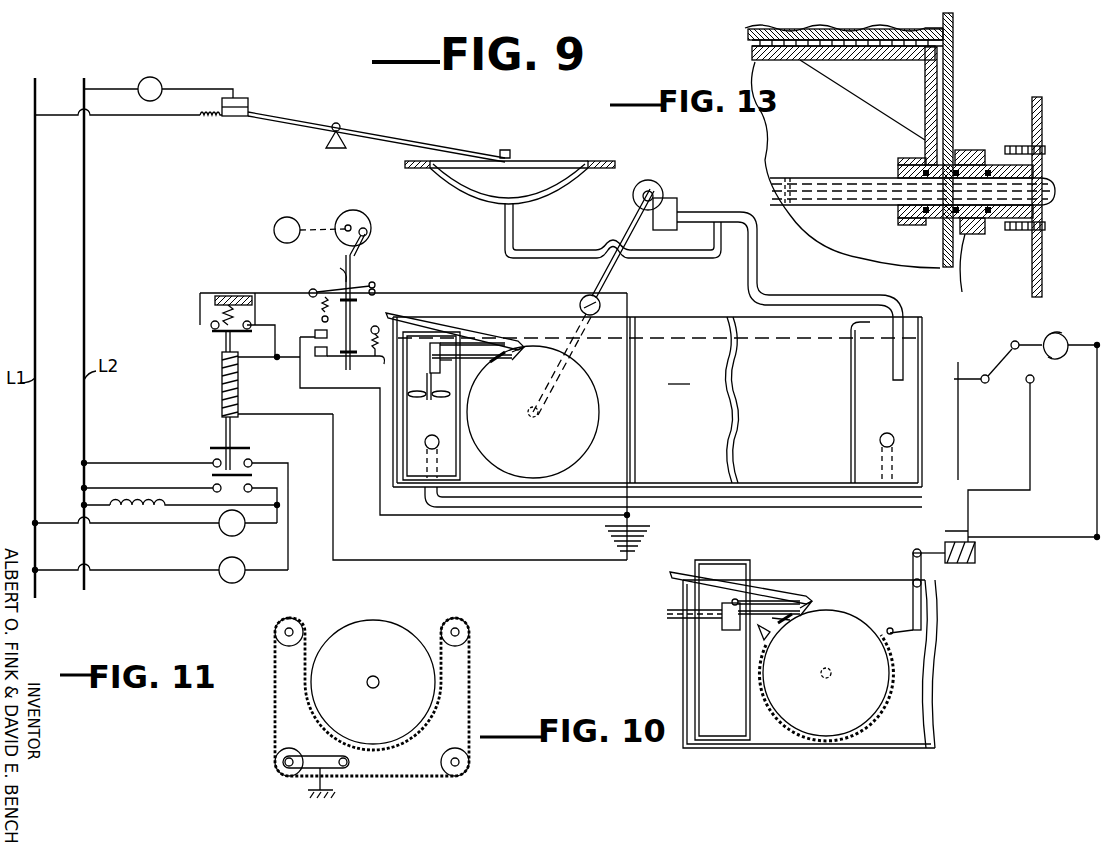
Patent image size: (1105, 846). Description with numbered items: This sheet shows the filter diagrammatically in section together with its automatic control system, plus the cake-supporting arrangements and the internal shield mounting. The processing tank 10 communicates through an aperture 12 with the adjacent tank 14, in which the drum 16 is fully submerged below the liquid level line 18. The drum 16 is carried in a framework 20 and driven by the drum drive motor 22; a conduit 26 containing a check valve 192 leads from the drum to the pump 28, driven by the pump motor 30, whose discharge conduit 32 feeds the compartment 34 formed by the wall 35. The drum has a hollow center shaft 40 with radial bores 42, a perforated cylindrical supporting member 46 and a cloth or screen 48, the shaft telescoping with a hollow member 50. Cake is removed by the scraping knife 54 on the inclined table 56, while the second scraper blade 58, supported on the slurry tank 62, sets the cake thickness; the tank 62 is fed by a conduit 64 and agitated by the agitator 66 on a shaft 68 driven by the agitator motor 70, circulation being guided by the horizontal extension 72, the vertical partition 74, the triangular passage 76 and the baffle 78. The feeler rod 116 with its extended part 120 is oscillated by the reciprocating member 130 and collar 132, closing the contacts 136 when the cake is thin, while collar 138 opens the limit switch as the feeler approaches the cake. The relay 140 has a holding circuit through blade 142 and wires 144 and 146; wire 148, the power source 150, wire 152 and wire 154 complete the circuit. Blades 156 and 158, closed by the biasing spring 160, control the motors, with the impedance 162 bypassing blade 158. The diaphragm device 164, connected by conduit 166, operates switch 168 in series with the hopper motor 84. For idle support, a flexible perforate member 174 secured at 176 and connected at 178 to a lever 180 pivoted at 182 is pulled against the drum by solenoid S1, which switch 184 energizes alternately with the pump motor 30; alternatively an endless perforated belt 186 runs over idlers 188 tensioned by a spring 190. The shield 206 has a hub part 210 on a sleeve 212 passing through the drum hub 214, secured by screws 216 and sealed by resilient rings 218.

In FIG. 9, the processing tank 10 is at (679, 374).
In FIG. 9, the aperture 12 is at (666, 426).
In FIG. 10, the aperture 12 is at (835, 664).
In FIG. 9, the tank 14 is at (530, 335).
In FIG. 9, the drum 16 is at (598, 382).
In FIG. 11, the drum 16 is at (384, 620).
In FIG. 10, the drum 16 is at (851, 612).
In FIG. 9, the liquid level line 18 is at (629, 328).
In FIG. 13, the framework 20 is at (1030, 104).
In FIG. 9, the drum drive motor 22 is at (240, 580).
In FIG. 9, the conduit 26 is at (610, 278).
In FIG. 9, the pump 28 is at (665, 184).
In FIG. 9, the pump motor 30 is at (1050, 334).
In FIG. 9, the discharge conduit 32 is at (750, 280).
In FIG. 9, the compartment 34 is at (388, 438).
In FIG. 9, the wall 35 is at (853, 402).
In FIG. 13, the hollow center shaft 40 is at (845, 177).
In FIG. 13, the radial bores 42 is at (795, 178).
In FIG. 13, the cylindrical supporting member 46 is at (752, 53).
In FIG. 13, the cloth or screen 48 is at (750, 33).
In FIG. 13, the hollow member 50 is at (900, 216).
In FIG. 9, the scraping knife 54 is at (508, 338).
In FIG. 10, the scraping knife 54 is at (805, 596).
In FIG. 9, the inclined table 56 is at (470, 325).
In FIG. 10, the inclined table 56 is at (790, 556).
In FIG. 9, the second scraper blade 58 is at (500, 364).
In FIG. 10, the second scraper blade 58 is at (776, 630).
In FIG. 9, the slurry tank 62 is at (461, 456).
In FIG. 10, the slurry tank 62 is at (752, 706).
In FIG. 9, the conduit 64 is at (708, 506).
In FIG. 9, the agitator 66 is at (435, 398).
In FIG. 9, the shaft 68 is at (422, 398).
In FIG. 9, the agitator motor 70 is at (240, 533).
In FIG. 9, the horizontal extension of blade 72 is at (426, 368).
In FIG. 10, the horizontal extension of blade 72 is at (738, 634).
In FIG. 9, the vertical partition 74 is at (430, 358).
In FIG. 10, the vertical partition 74 is at (699, 646).
In FIG. 9, the triangular passage 76 is at (445, 345).
In FIG. 10, the triangular passage 76 is at (700, 618).
In FIG. 9, the horizontal baffle 78 is at (387, 314).
In FIG. 10, the horizontal baffle 78 is at (730, 600).
In FIG. 9, the hopper motor 84 is at (150, 77).
In FIG. 10, the feeler rod 116 is at (774, 656).
In FIG. 9, the extended part of rod 120 is at (372, 350).
In FIG. 9, the reciprocating member 130 is at (361, 243).
In FIG. 9, the collar 132 is at (355, 388).
In FIG. 9, the contacts 136 is at (358, 368).
In FIG. 9, the collar 138 is at (375, 288).
In FIG. 9, the relay 140 is at (222, 384).
In FIG. 9, the relay blade 142 is at (221, 333).
In FIG. 9, the wire 144 is at (310, 292).
In FIG. 9, the wire 146 is at (300, 340).
In FIG. 9, the wire 148 is at (440, 510).
In FIG. 9, the source of electric power 150 is at (605, 536).
In FIG. 9, the wire 152 is at (626, 452).
In FIG. 9, the wire 154 is at (508, 560).
In FIG. 9, the relay blade 156 is at (222, 448).
In FIG. 9, the relay blade 158 is at (210, 475).
In FIG. 9, the biasing spring 160 is at (226, 310).
In FIG. 9, the impedance 162 is at (140, 510).
In FIG. 9, the diaphragm device 164 is at (585, 143).
In FIG. 9, the conduit 166 is at (582, 256).
In FIG. 9, the switch 168 is at (250, 105).
In FIG. 10, the flexible perforate member 174 is at (829, 745).
In FIG. 10, the securing point 176 is at (755, 652).
In FIG. 10, the connection 178 is at (903, 634).
In FIG. 10, the lever 180 is at (925, 610).
In FIG. 10, the pivot 182 is at (921, 586).
In FIG. 9, the switch 184 is at (1003, 358).
In FIG. 11, the endless perforated belt 186 is at (476, 686).
In FIG. 11, the idlers 188 is at (470, 627).
In FIG. 11, the spring 190 is at (335, 790).
In FIG. 9, the check valve 192 is at (601, 305).
In FIG. 13, the mask or shield 206 is at (773, 62).
In FIG. 13, the hub part 210 is at (913, 164).
In FIG. 13, the sleeve 212 is at (910, 226).
In FIG. 13, the hub 214 is at (957, 157).
In FIG. 13, the screws 216 is at (1010, 231).
In FIG. 13, the resilient rings 218 is at (960, 288).
In FIG. 9, the solenoid S1 is at (975, 542).